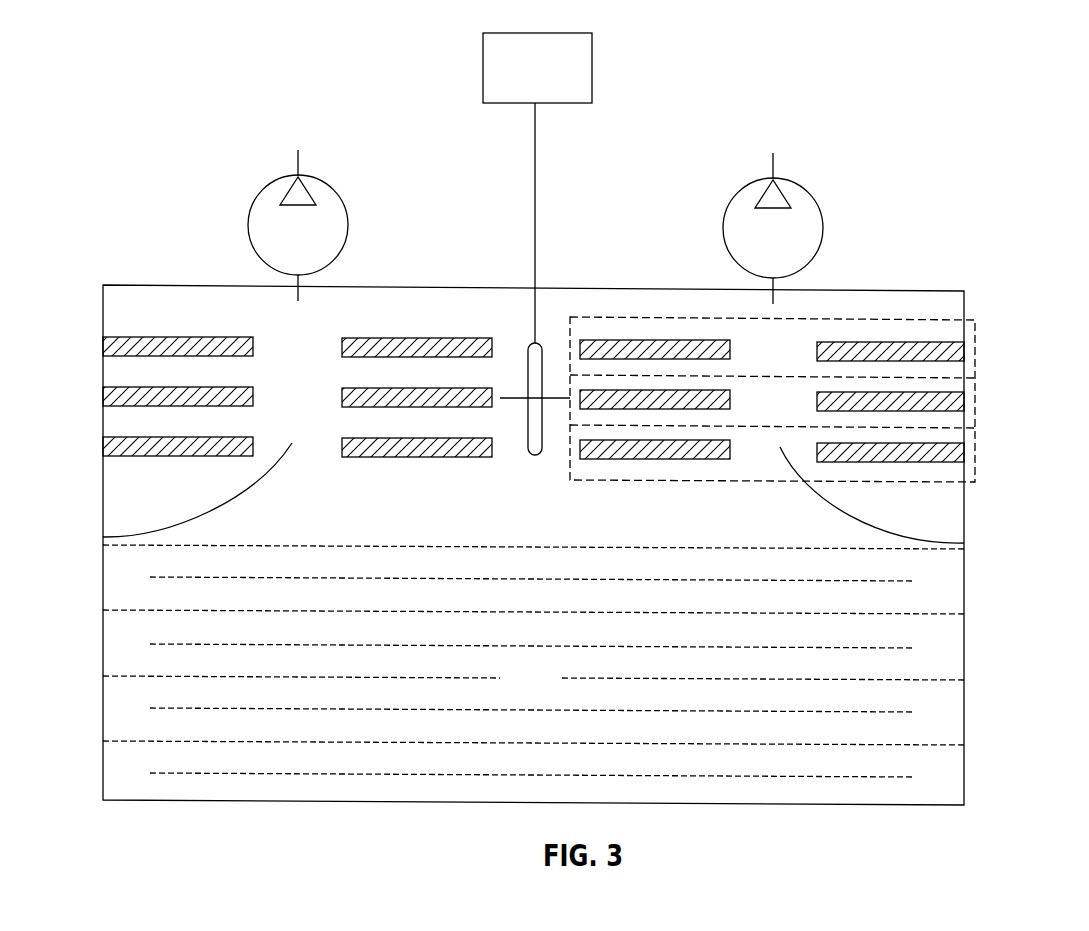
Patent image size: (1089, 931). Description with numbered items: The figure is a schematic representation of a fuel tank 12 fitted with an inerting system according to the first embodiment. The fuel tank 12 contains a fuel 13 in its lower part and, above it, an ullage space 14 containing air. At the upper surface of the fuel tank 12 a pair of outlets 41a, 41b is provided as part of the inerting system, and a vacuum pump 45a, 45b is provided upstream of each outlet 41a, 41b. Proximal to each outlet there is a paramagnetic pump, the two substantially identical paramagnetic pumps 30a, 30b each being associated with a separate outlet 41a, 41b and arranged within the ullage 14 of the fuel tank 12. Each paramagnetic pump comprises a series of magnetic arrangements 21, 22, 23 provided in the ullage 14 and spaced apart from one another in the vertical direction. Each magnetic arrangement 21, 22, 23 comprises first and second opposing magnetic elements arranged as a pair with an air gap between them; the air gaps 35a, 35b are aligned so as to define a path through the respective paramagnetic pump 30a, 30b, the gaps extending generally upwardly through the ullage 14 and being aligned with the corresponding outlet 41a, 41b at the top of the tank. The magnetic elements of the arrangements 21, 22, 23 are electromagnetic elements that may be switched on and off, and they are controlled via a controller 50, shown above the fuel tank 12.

The fuel tank 12 is at (964, 662).
The fuel 13 is at (550, 692).
The ullage space 14 is at (550, 523).
The magnetic arrangement 21 is at (977, 450).
The magnetic arrangement 22 is at (977, 393).
The magnetic arrangement 23 is at (977, 342).
The paramagnetic pump 30a is at (810, 358).
The paramagnetic pump 30b is at (323, 310).
The air gap 35a is at (964, 543).
The air gap 35b is at (103, 537).
The outlet 41a is at (770, 287).
The outlet 41b is at (296, 283).
The vacuum pump 45a is at (800, 182).
The vacuum pump 45b is at (325, 178).
The controller 50 is at (537, 244).